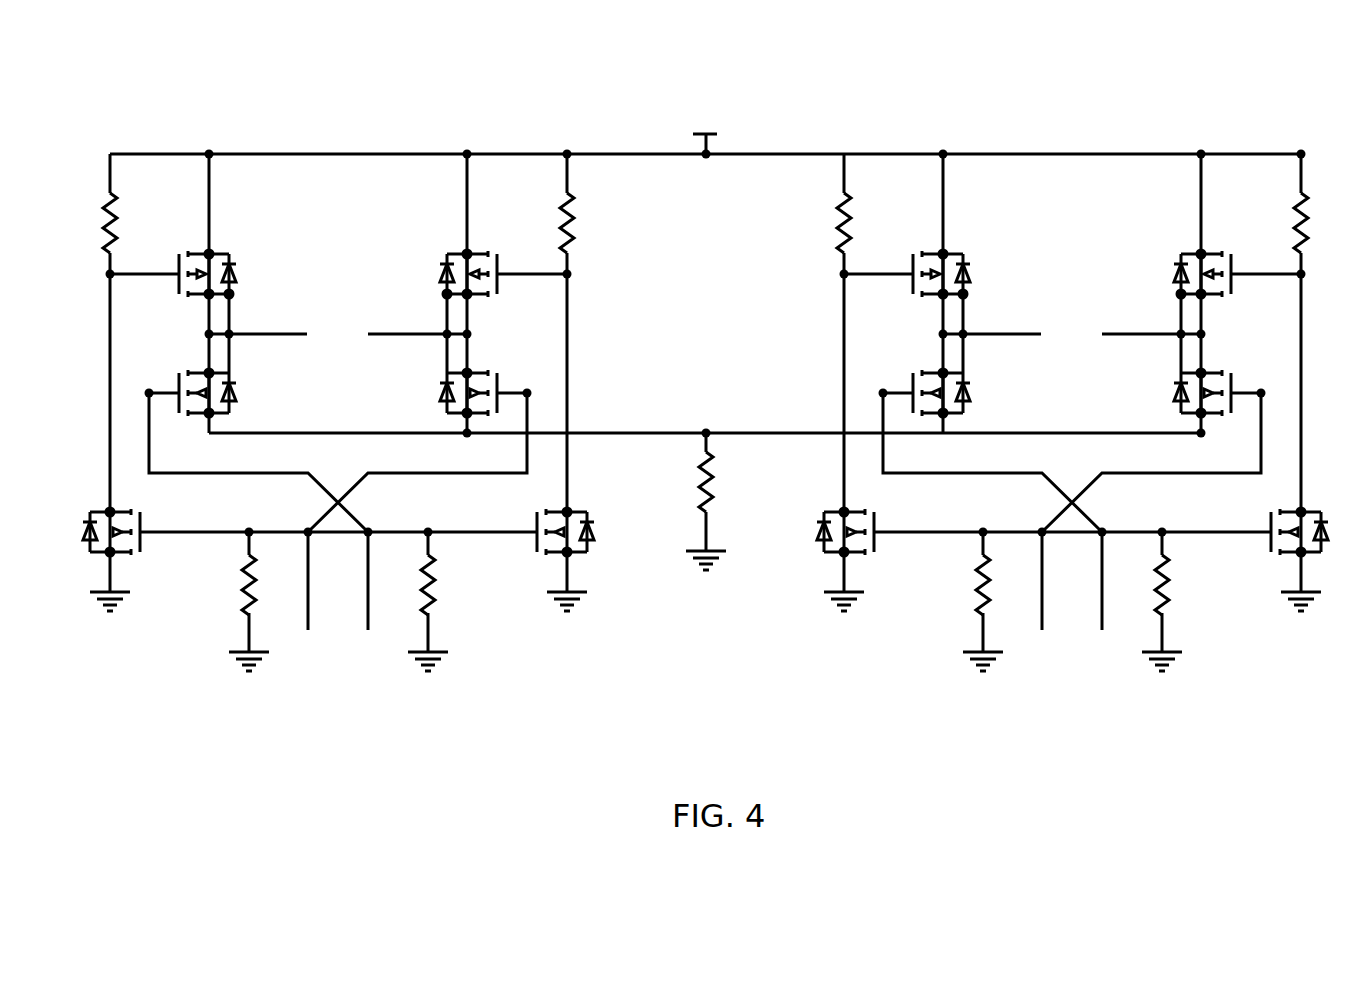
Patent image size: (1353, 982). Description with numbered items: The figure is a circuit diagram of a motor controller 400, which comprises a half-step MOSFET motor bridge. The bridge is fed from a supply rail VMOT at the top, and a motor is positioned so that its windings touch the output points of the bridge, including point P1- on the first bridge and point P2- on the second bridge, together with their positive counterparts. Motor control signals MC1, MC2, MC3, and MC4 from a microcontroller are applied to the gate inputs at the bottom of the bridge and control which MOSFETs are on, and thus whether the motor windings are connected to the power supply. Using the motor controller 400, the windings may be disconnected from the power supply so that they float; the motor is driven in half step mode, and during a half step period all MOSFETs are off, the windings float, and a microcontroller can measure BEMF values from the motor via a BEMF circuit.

The motor controller 400 is at (450, 76).
The motor supply voltage node VMOT is at (708, 135).
The motor winding point P1− P1- is at (407, 325).
The motor winding point P2− P2- is at (1141, 325).
The motor control signal MC1 is at (307, 591).
The motor control signal MC2 is at (375, 591).
The motor control signal MC3 is at (1050, 591).
The motor control signal MC4 is at (1112, 591).